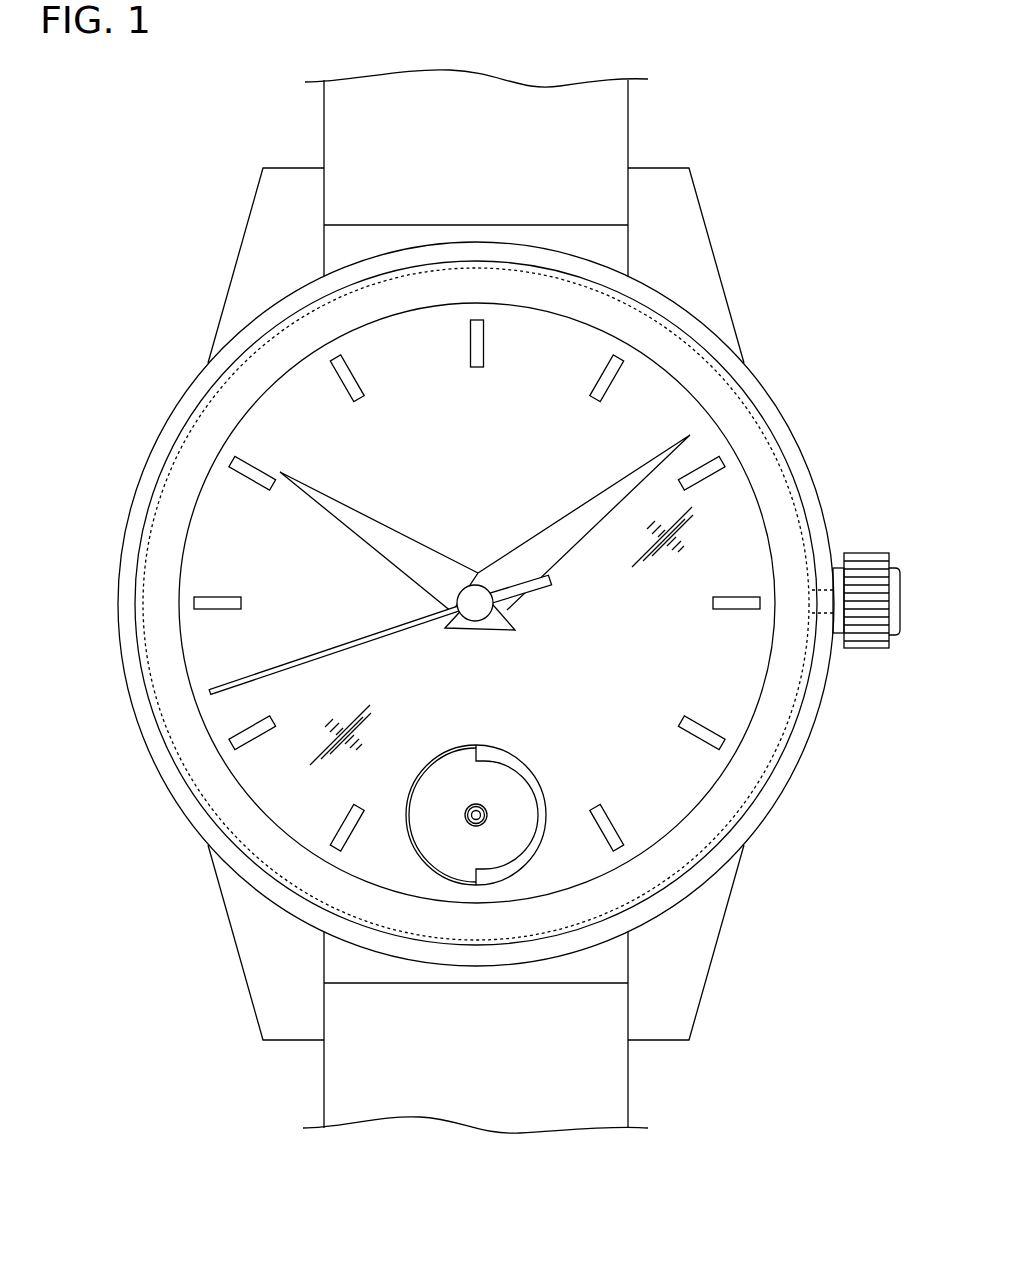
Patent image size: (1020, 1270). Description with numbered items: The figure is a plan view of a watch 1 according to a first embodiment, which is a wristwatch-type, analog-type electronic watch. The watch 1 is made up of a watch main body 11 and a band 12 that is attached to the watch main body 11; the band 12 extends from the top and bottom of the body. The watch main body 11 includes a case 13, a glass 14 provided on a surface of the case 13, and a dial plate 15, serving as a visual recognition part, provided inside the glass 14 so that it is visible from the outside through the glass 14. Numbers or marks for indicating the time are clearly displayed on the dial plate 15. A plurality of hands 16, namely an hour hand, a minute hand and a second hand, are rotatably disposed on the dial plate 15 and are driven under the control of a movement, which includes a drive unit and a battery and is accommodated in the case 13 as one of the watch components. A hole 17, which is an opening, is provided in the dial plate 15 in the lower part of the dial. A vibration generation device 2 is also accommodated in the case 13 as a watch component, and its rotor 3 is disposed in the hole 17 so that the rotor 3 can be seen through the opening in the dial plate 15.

The watch 1 is at (820, 106).
The vibration generation device 2 is at (512, 832).
The rotor 3 is at (440, 823).
The watch main body 11 is at (140, 454).
The band 12 is at (613, 128).
The case 13 is at (180, 728).
The glass 14 is at (295, 790).
The dial plate 15 is at (310, 440).
The hands 16 is at (647, 460).
The hole 17 is at (507, 876).